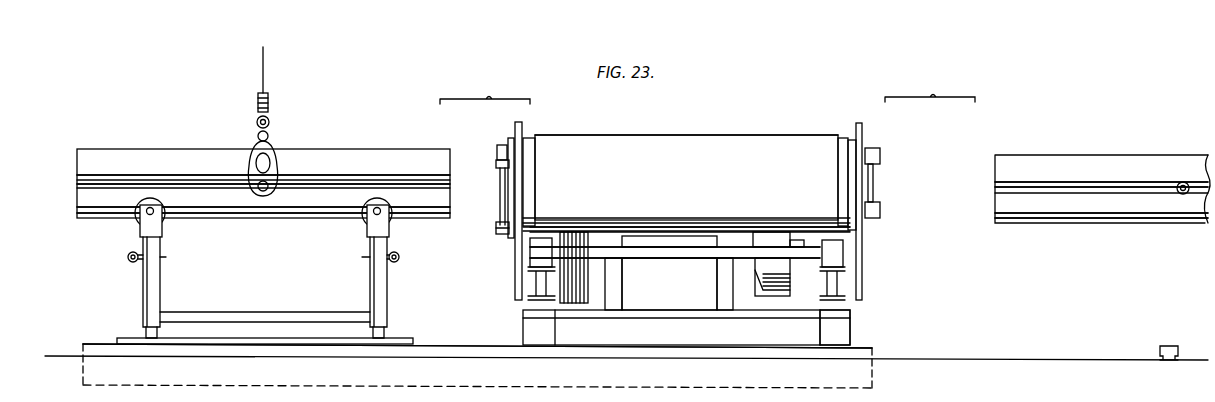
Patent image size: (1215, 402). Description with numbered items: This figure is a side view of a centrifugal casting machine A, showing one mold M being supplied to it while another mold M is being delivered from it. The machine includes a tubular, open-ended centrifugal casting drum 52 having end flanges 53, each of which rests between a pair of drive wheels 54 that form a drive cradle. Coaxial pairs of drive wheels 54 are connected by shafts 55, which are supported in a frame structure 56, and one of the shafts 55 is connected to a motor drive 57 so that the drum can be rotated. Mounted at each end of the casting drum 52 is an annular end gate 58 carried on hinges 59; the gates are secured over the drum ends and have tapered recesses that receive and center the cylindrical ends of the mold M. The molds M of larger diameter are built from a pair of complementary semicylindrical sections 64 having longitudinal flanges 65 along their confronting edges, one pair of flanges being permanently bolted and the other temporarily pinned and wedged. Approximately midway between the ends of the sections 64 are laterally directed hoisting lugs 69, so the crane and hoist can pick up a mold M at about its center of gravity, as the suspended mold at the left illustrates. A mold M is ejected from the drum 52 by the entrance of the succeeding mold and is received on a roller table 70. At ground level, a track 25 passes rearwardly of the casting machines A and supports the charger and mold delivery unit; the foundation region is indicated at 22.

The floor / foundation 22 is at (1040, 398).
The track 25 is at (468, 185).
The centrifugal casting drum 52 is at (662, 150).
The end flanges 53 is at (521, 128).
The drive wheels 54 is at (520, 283).
The shafts 55 is at (648, 250).
The frame structure 56 is at (832, 285).
The motor drive 57 is at (686, 286).
The annular end gate 58 is at (496, 146).
The hinges 59 is at (497, 162).
The complementary semicylindrical sections 64 is at (408, 200).
The longitudinal flanges 65 is at (137, 183).
The hoisting lugs 69 is at (267, 179).
The table 70 is at (268, 343).
The centrifugal casting machine A is at (754, 131).
The mold M is at (193, 163).